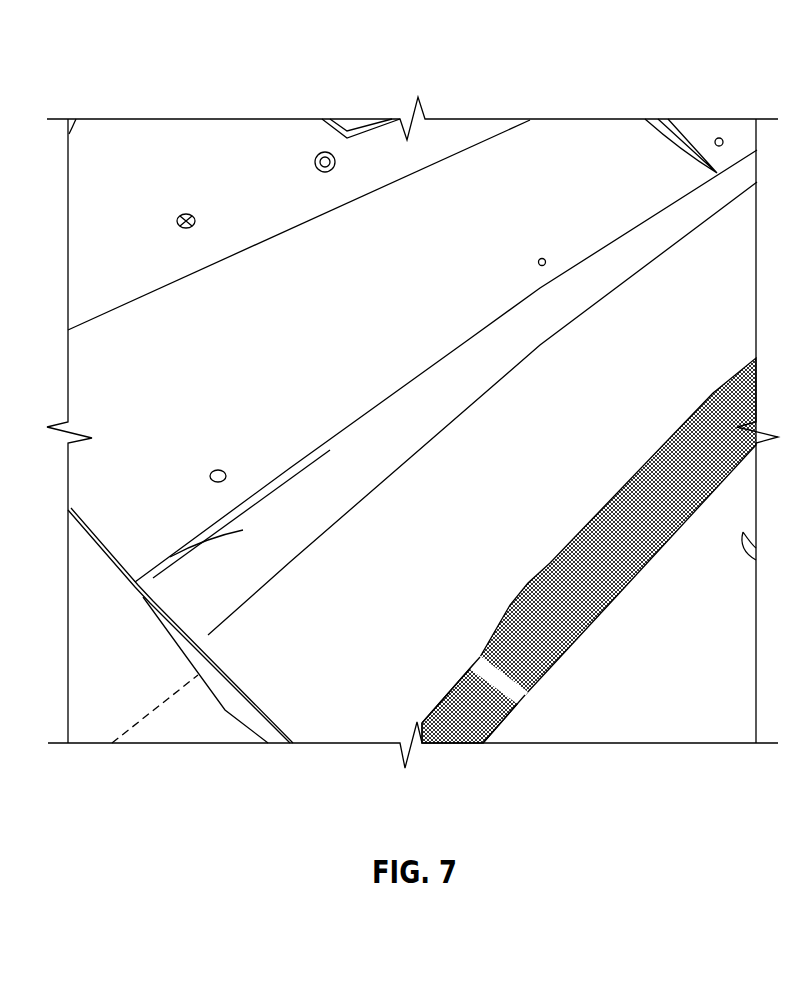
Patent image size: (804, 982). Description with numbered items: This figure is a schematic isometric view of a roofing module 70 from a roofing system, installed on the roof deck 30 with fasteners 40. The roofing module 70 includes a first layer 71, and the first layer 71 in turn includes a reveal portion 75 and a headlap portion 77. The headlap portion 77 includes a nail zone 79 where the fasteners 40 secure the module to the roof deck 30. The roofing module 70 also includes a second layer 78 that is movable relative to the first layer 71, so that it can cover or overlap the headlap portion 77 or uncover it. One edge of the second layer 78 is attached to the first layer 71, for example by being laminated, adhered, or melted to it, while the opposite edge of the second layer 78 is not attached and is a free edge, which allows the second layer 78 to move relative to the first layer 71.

The roof deck 30 is at (176, 189).
The fastener 40 is at (218, 492).
The roofing module 70 is at (223, 712).
The first layer 71 is at (450, 725).
The reveal portion 75 is at (599, 596).
The headlap portion 77 is at (365, 283).
The second layer 78 is at (665, 232).
The nail zone 79 is at (498, 283).